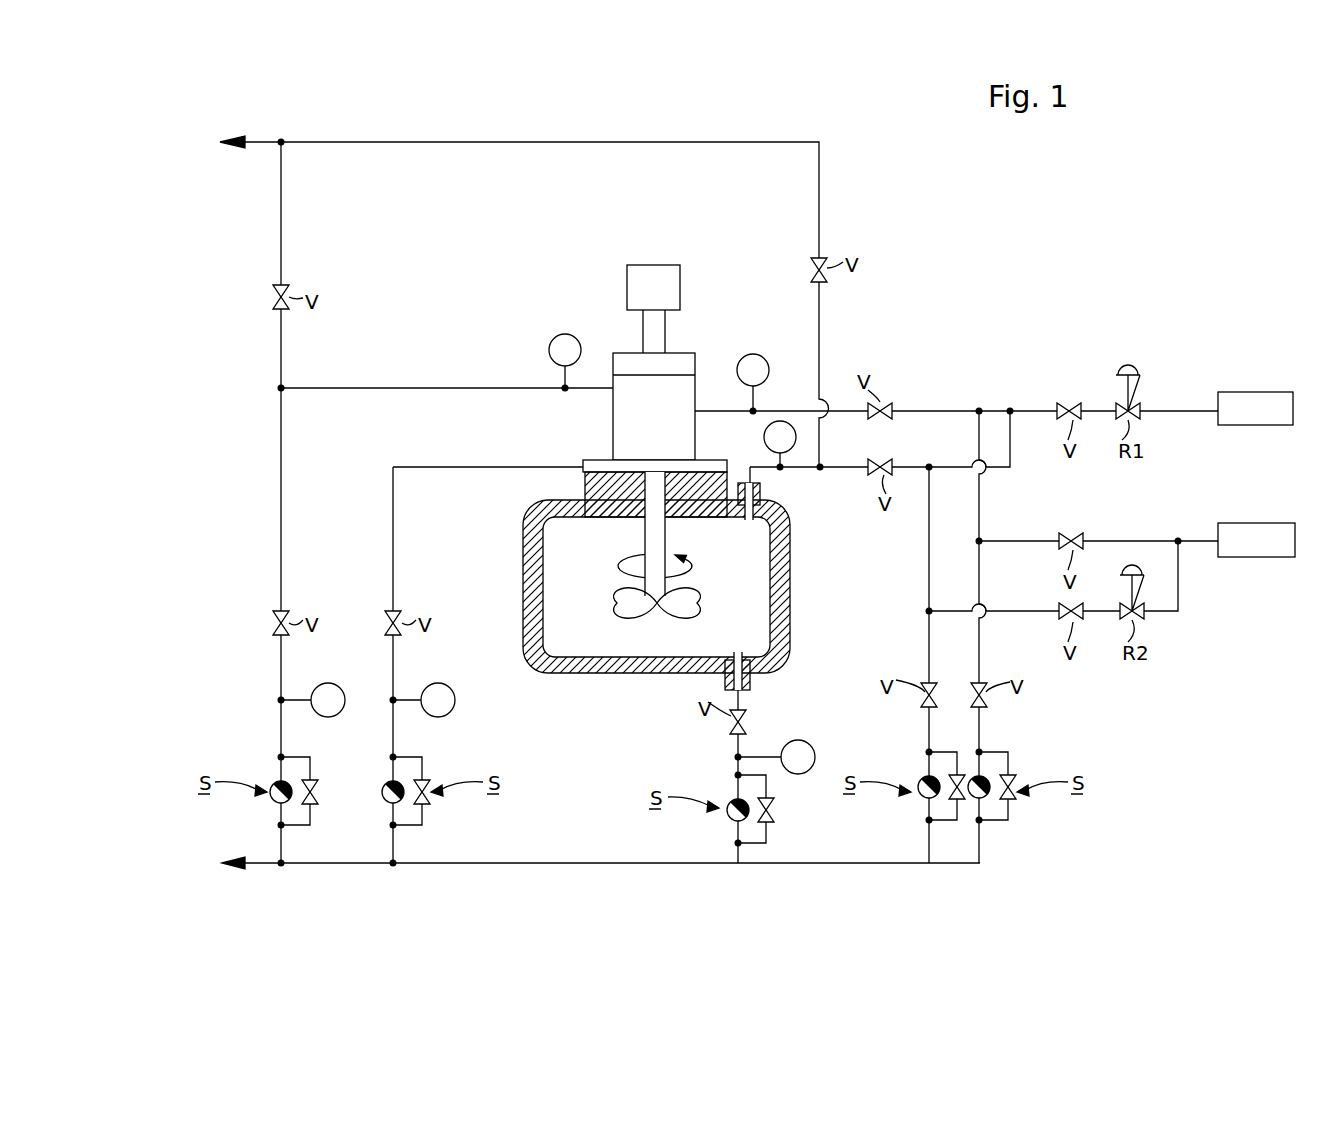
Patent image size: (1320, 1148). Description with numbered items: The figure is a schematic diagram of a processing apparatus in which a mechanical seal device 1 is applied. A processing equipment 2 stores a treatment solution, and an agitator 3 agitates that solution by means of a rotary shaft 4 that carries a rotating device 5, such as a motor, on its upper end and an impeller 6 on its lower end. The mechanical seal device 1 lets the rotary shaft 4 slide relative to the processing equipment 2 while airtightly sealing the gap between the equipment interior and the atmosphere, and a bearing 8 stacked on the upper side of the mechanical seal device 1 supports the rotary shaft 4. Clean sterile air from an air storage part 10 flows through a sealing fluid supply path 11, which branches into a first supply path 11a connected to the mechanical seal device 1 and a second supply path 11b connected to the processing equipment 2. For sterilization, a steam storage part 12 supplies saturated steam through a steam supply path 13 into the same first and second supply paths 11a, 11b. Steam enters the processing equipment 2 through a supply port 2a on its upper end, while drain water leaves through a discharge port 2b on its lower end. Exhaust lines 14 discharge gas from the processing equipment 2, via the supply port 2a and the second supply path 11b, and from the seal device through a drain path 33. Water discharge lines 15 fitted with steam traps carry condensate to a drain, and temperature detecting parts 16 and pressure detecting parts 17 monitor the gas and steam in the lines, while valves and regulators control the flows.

The mechanical seal device 1 is at (597, 300).
The processing equipment 2 is at (791, 570).
The supply port 2a is at (770, 530).
The discharge port 2b is at (780, 641).
The agitator 3 is at (572, 579).
The rotary shaft 4 is at (640, 537).
The rotating device 5 is at (656, 265).
The impeller 6 is at (640, 615).
The bearing 8 is at (690, 353).
The air storage part 10 is at (1253, 392).
The sealing fluid supply path 11 is at (1178, 411).
The first supply path 11a is at (920, 408).
The second supply path 11b is at (948, 463).
The steam storage part 12 is at (1258, 523).
The steam supply path 13 is at (1200, 541).
The exhaust line 14 is at (536, 142).
The water discharge line 15 is at (281, 672).
The temperature detecting part 16 is at (330, 683).
The pressure detecting part 17 is at (563, 334).
The drain path 33 is at (421, 388).